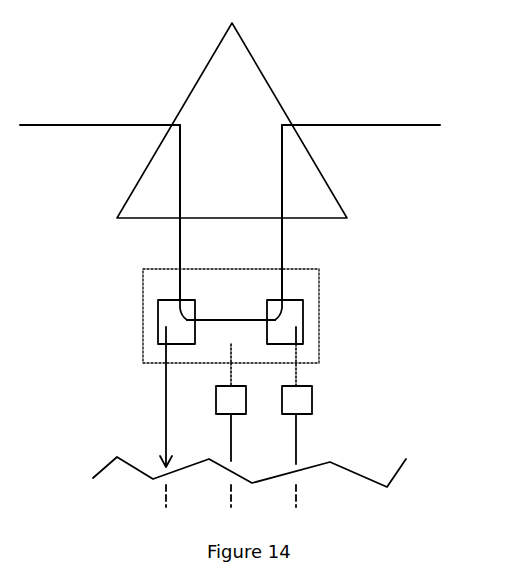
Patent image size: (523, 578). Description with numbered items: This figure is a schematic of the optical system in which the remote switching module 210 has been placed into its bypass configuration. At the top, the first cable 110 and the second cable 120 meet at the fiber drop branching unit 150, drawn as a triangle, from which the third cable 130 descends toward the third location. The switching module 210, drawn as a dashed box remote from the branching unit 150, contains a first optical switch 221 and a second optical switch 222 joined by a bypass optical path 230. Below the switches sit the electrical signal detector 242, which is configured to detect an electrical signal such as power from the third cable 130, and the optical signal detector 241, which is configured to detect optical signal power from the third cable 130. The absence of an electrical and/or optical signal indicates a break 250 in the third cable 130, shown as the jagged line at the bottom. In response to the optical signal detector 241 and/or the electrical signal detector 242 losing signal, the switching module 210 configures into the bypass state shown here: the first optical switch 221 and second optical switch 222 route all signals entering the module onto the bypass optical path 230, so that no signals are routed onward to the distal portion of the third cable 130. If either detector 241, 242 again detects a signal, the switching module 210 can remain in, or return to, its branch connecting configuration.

The first cable 110 is at (78, 117).
The second cable 120 is at (390, 117).
The third cable 130 is at (157, 247).
The branching unit 150 is at (198, 80).
The switching module 210 is at (319, 285).
The first optical switch 221 is at (158, 322).
The second optical switch 222 is at (303, 328).
The bypass optical path 230 is at (217, 318).
The optical signal detector 241 is at (312, 414).
The electrical signal detector 242 is at (232, 415).
The break 250 is at (398, 473).